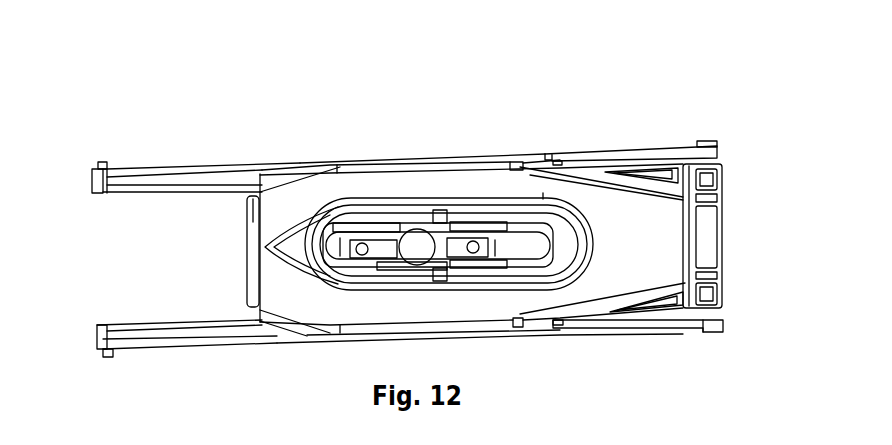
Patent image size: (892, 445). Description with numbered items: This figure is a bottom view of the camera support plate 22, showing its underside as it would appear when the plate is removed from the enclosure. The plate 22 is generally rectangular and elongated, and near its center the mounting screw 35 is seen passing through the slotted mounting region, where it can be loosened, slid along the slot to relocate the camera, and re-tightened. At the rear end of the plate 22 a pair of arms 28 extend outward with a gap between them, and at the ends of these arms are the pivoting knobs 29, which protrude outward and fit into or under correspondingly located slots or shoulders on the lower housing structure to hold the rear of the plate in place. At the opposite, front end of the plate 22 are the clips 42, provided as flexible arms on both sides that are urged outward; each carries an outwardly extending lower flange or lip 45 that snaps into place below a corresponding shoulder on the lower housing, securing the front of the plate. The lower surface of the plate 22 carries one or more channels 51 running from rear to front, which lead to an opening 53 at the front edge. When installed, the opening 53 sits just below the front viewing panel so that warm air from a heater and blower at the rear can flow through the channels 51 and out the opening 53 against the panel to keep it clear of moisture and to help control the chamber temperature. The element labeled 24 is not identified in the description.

The plate 22 is at (474, 150).
The guide track 24 is at (361, 222).
The arms 28 is at (204, 170).
The knobs 29 is at (104, 162).
The mounting screw 35 is at (415, 246).
The clips 42 is at (657, 151).
The lower flange or lip 45 is at (711, 142).
The channels 51 is at (273, 290).
The opening 53 is at (706, 243).